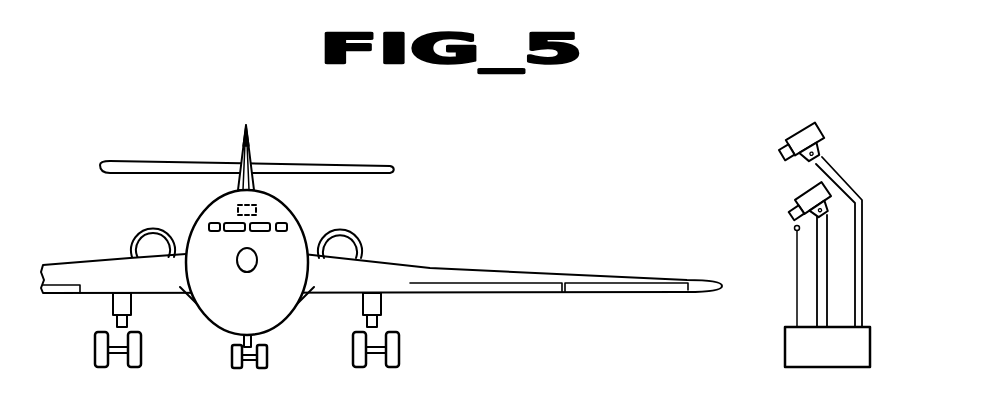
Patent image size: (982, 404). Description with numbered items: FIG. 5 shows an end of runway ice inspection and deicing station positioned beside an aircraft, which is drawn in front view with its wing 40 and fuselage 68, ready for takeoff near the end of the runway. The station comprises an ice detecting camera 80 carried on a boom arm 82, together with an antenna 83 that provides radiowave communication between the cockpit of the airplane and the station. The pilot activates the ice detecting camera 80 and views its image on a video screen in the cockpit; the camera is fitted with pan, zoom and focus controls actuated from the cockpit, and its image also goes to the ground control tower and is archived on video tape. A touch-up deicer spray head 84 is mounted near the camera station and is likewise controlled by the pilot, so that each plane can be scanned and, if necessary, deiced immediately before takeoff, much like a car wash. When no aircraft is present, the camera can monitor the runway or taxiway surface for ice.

The aircraft wing 40 is at (453, 267).
The aircraft fuselage 68 is at (290, 213).
The ice detecting camera 80 is at (802, 128).
The boom arm 82 is at (850, 188).
The antenna 83 is at (800, 306).
The touch-up deicer spray head 84 is at (807, 189).